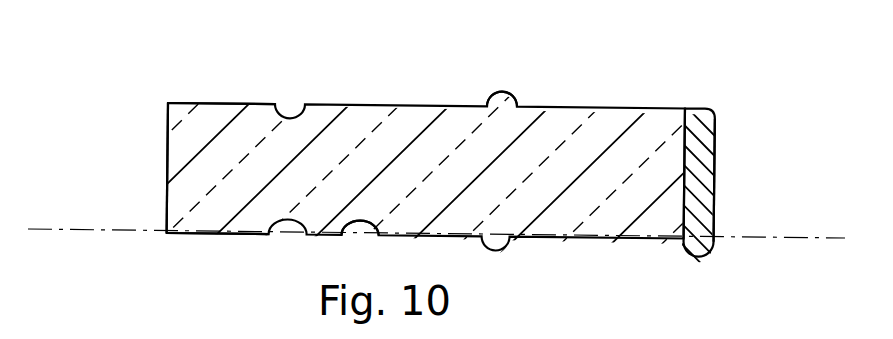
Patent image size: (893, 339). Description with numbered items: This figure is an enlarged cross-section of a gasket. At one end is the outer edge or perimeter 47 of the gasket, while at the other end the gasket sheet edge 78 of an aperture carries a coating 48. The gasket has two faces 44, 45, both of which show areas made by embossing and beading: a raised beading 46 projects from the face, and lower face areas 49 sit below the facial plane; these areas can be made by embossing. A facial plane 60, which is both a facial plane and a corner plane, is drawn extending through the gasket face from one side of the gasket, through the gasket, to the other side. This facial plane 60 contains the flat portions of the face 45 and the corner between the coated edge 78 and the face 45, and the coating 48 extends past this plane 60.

The face 44 is at (223, 104).
The face 45 is at (230, 235).
The beading 46 is at (502, 92).
The outer edge or perimeter 47 is at (168, 160).
The coating 48 is at (716, 177).
The lower face areas 49 is at (358, 222).
The facial plane 60 is at (775, 238).
The gasket sheet edge 78 is at (685, 147).